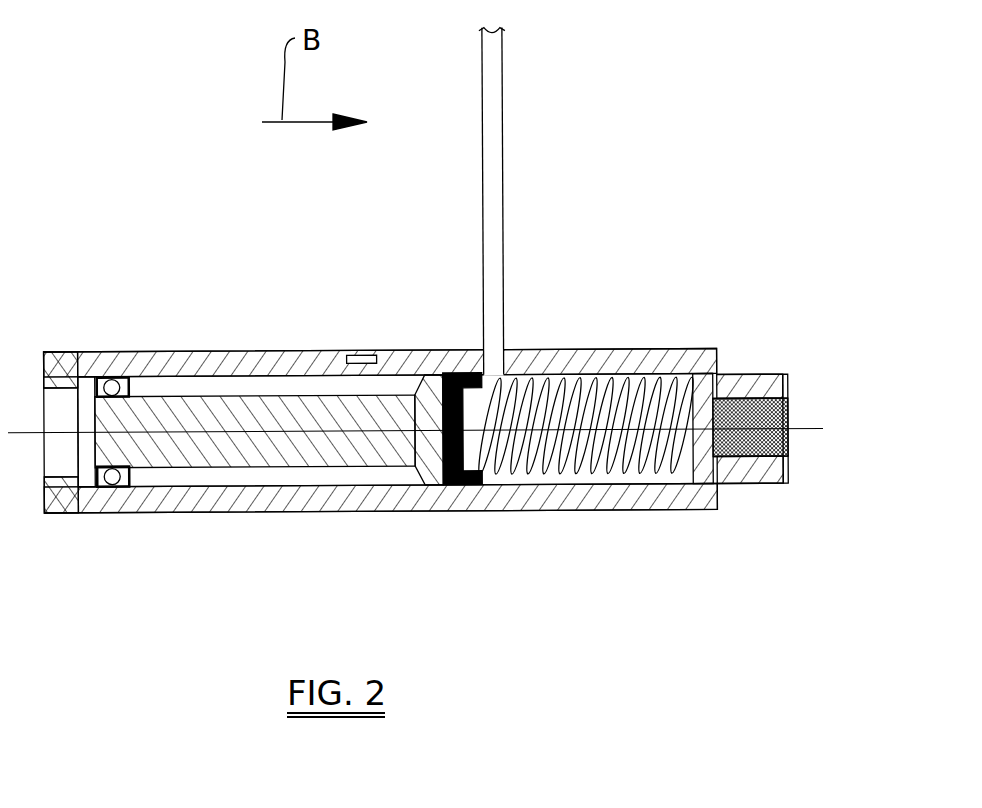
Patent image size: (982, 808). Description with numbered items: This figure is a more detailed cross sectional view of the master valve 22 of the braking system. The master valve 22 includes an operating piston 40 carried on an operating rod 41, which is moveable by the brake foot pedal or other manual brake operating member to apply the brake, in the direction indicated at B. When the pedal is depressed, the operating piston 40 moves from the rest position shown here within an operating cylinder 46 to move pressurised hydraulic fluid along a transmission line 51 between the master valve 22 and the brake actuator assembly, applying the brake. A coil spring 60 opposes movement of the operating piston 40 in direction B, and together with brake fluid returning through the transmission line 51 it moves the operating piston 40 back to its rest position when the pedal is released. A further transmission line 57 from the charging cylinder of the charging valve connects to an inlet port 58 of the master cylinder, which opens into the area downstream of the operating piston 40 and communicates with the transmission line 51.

The master valve 22 is at (557, 540).
The operating piston 40 is at (410, 378).
The operating rod 41 is at (203, 402).
The operating cylinder 46 is at (481, 487).
The transmission line 51 is at (803, 427).
The transmission line 57 is at (503, 230).
The inlet port 58 is at (505, 347).
The coil spring 60 is at (620, 468).